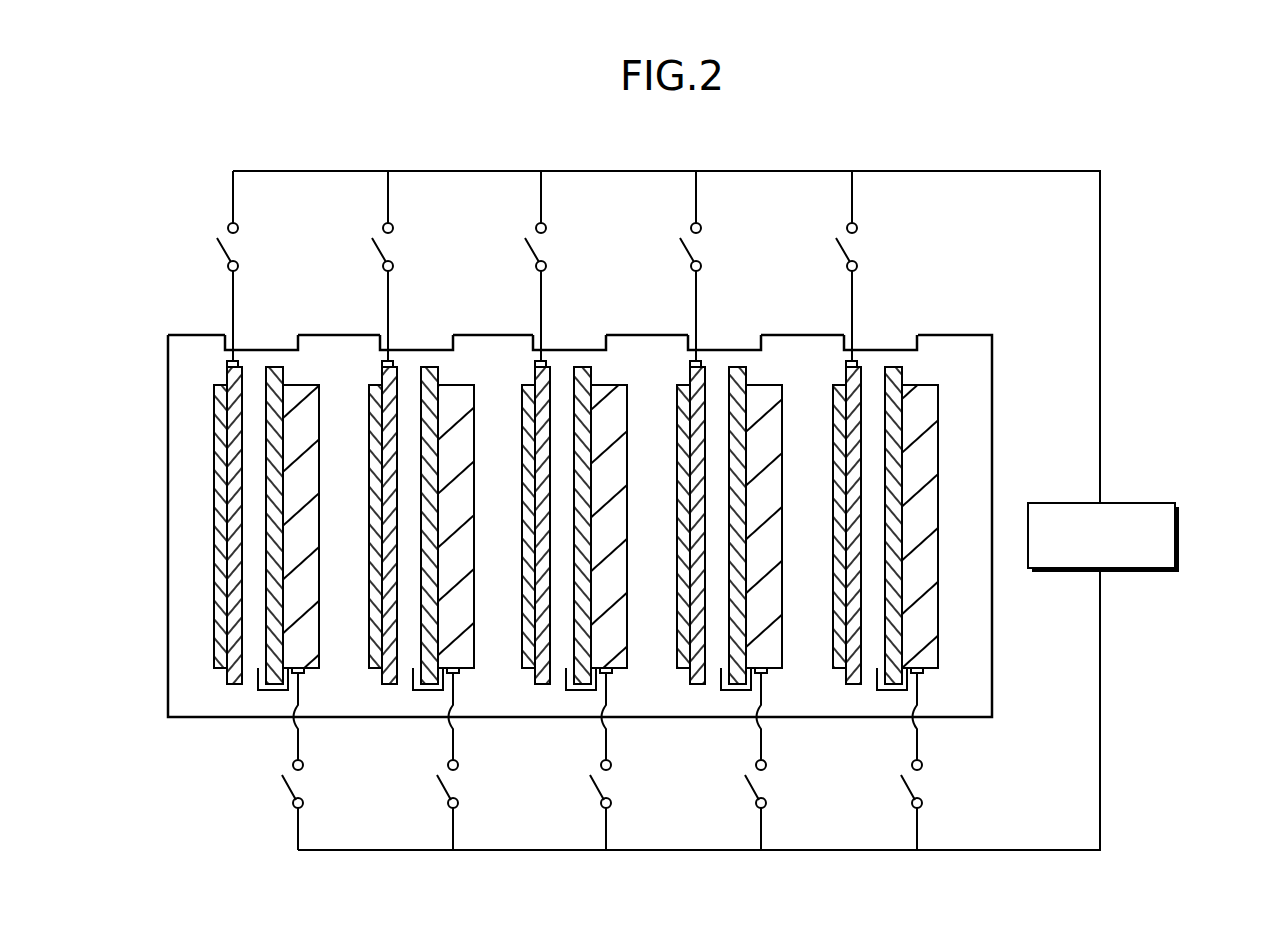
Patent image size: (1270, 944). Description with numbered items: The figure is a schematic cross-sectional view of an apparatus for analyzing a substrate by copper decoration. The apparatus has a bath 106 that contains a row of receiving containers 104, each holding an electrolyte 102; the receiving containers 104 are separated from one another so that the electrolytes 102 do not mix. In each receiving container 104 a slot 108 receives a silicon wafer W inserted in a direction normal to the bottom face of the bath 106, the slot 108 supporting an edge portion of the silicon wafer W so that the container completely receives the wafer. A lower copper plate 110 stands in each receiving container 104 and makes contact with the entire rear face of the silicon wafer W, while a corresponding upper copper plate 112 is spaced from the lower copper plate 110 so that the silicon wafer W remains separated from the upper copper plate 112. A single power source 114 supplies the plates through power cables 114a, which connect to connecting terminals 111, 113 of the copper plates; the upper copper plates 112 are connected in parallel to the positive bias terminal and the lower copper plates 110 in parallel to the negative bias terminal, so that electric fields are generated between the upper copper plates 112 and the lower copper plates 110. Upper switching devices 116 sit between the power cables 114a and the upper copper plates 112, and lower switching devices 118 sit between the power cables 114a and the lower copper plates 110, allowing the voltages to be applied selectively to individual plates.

The electrolyte 102 is at (408, 355).
The receiving container 104 is at (293, 355).
The bath 106 is at (178, 318).
The slot 108 is at (262, 692).
The lower copper plate 110 is at (305, 640).
The connecting terminal 111 is at (923, 676).
The upper copper plate 112 is at (232, 686).
The connecting terminal 113 is at (858, 353).
The power source 114 is at (1178, 533).
The power cable 114a is at (1103, 390).
The upper switching device 116 is at (858, 225).
The lower switching device 118 is at (922, 802).
The silicon wafer W is at (259, 367).